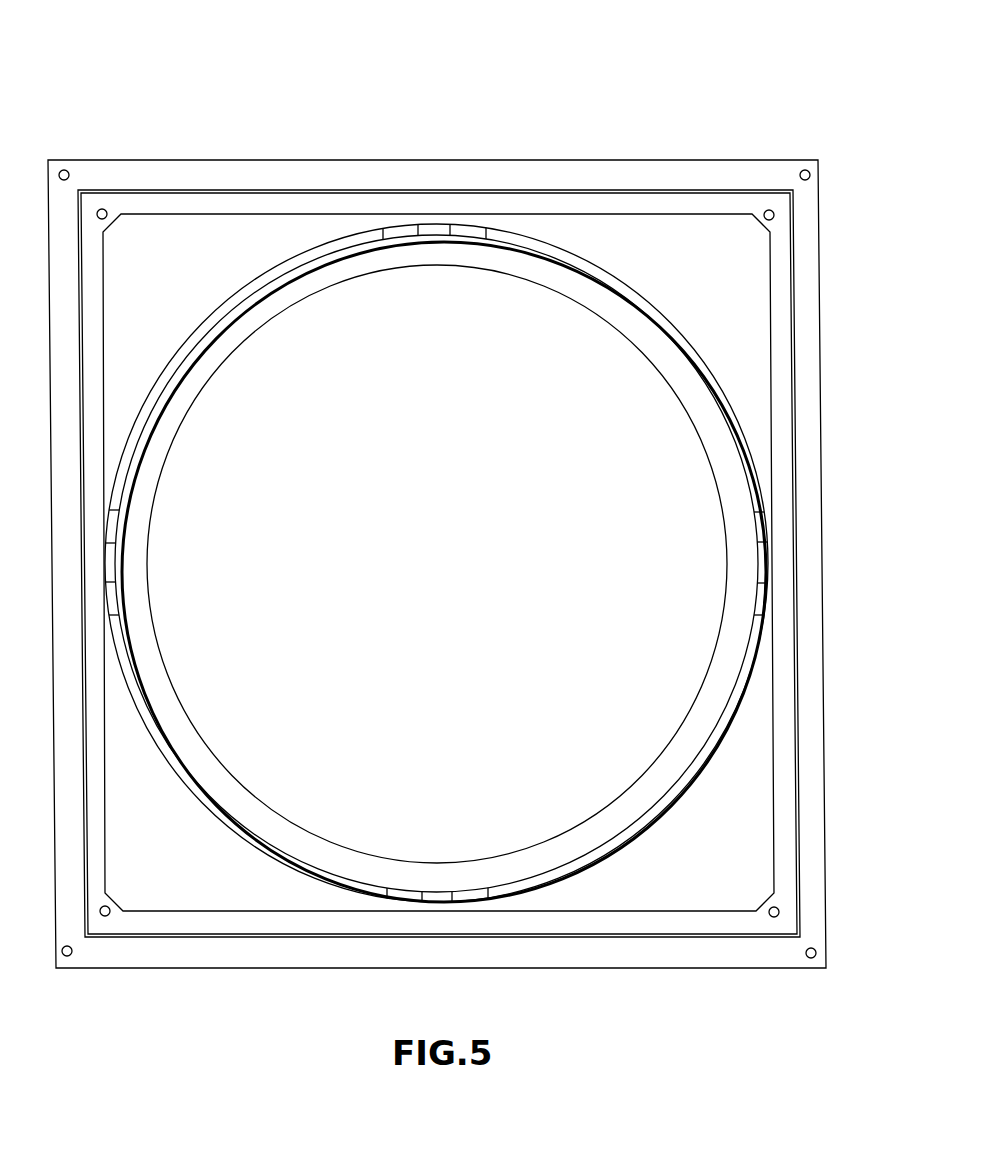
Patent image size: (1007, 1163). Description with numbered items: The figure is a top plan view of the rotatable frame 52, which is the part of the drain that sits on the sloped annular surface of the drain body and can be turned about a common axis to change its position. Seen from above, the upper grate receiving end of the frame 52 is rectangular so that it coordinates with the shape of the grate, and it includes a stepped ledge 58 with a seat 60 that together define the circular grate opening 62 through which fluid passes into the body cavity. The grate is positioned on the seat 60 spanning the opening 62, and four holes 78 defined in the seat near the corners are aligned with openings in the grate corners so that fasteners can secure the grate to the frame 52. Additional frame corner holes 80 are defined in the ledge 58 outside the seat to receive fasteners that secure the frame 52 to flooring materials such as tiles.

The rotatable frame 52 is at (652, 108).
The stepped ledge 58 is at (820, 297).
The seat 60 is at (776, 277).
The grate opening 62 is at (456, 554).
The holes 78 is at (105, 218).
The frame corner holes 80 is at (64, 170).